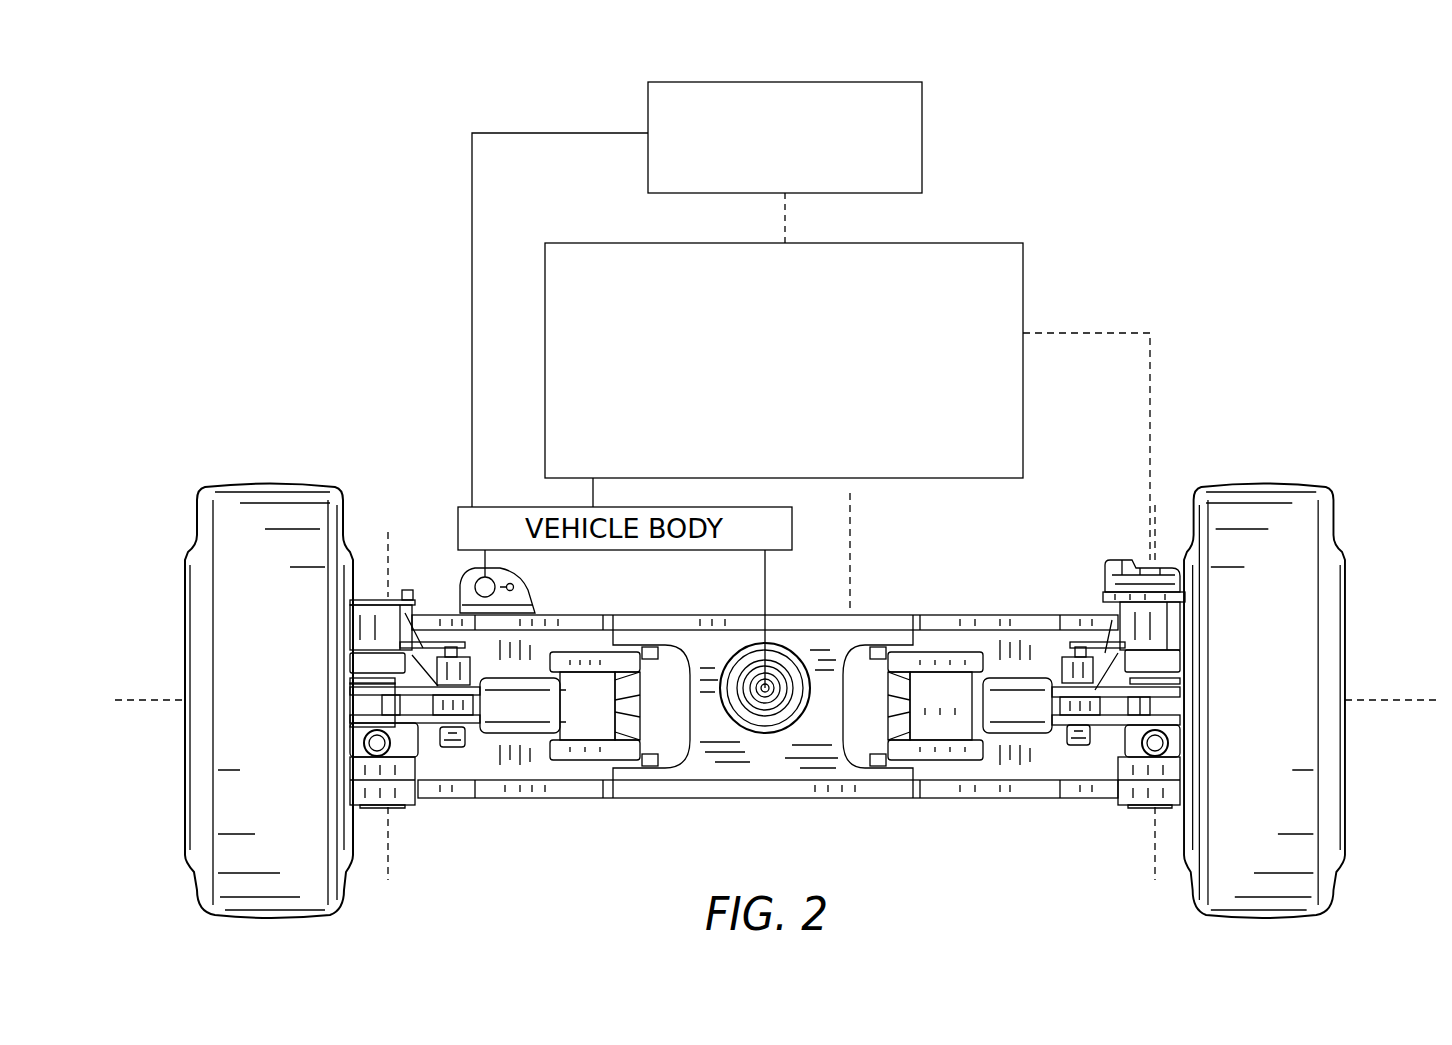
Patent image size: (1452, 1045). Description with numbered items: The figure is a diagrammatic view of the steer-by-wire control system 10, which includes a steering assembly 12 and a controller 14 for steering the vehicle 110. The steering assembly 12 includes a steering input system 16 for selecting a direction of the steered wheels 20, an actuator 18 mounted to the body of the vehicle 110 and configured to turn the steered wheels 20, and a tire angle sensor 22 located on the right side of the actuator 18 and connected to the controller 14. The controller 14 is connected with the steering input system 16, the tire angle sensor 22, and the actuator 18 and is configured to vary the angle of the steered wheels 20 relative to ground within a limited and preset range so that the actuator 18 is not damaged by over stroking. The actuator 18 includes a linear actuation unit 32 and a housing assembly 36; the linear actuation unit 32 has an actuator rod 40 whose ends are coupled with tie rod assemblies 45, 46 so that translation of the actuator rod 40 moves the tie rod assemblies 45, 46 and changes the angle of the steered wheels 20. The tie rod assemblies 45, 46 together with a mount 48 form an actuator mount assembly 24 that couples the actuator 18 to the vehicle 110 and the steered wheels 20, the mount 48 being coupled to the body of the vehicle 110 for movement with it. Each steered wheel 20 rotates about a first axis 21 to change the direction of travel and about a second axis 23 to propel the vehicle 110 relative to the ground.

The steer-by-wire control system 10 is at (1129, 60).
The steering assembly 12 is at (342, 301).
The controller 14 is at (995, 243).
The steering input system 16 is at (924, 125).
The actuator 18 is at (925, 648).
The steered wheels 20 is at (262, 485).
The first axis 21 is at (388, 548).
The tire angle sensor 22 is at (1155, 615).
The second axis 23 is at (167, 697).
The actuator mount assembly 24 is at (1064, 607).
The linear actuation unit 32 is at (1029, 744).
The housing assembly 36 is at (926, 752).
The actuator rod 40 is at (523, 713).
The tie rod assembly 45 is at (431, 740).
The tie rod assembly 46 is at (1099, 737).
The mount 48 is at (1002, 620).
The vehicle 110 is at (520, 506).